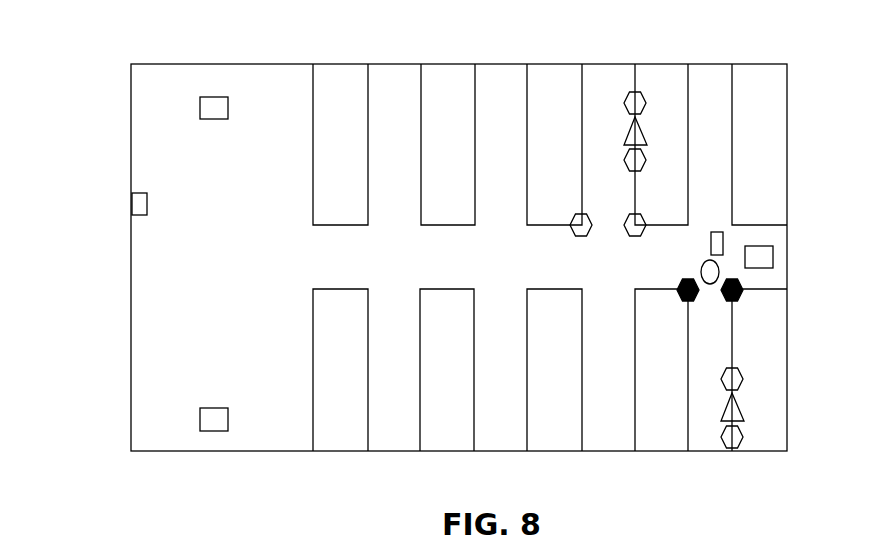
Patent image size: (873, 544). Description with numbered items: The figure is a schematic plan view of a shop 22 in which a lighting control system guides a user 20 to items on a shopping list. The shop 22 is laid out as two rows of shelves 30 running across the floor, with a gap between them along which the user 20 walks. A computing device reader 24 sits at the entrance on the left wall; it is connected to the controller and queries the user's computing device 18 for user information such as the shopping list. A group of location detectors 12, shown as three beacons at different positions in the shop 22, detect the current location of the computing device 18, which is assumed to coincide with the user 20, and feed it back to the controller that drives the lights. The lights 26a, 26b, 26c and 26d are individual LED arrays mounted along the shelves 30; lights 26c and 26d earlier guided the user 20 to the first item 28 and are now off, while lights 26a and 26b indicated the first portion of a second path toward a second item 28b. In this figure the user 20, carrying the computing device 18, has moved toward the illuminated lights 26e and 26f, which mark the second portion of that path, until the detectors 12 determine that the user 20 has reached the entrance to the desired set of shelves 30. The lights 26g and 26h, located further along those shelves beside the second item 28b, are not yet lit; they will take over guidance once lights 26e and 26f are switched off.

The location detectors 12 is at (214, 97).
The computing device 18 is at (723, 241).
The user 20 is at (701, 272).
The shop 22 is at (131, 332).
The computing device reader 24 is at (131, 200).
The light 26a is at (571, 232).
The light 26b is at (646, 218).
The light 26c is at (646, 100).
The light 26d is at (646, 158).
The light 26e is at (677, 290).
The light 26f is at (743, 291).
The light 26g is at (743, 375).
The light 26h is at (743, 434).
The item 28 is at (648, 133).
The second item 28b is at (744, 410).
The shelves 30 is at (340, 451).